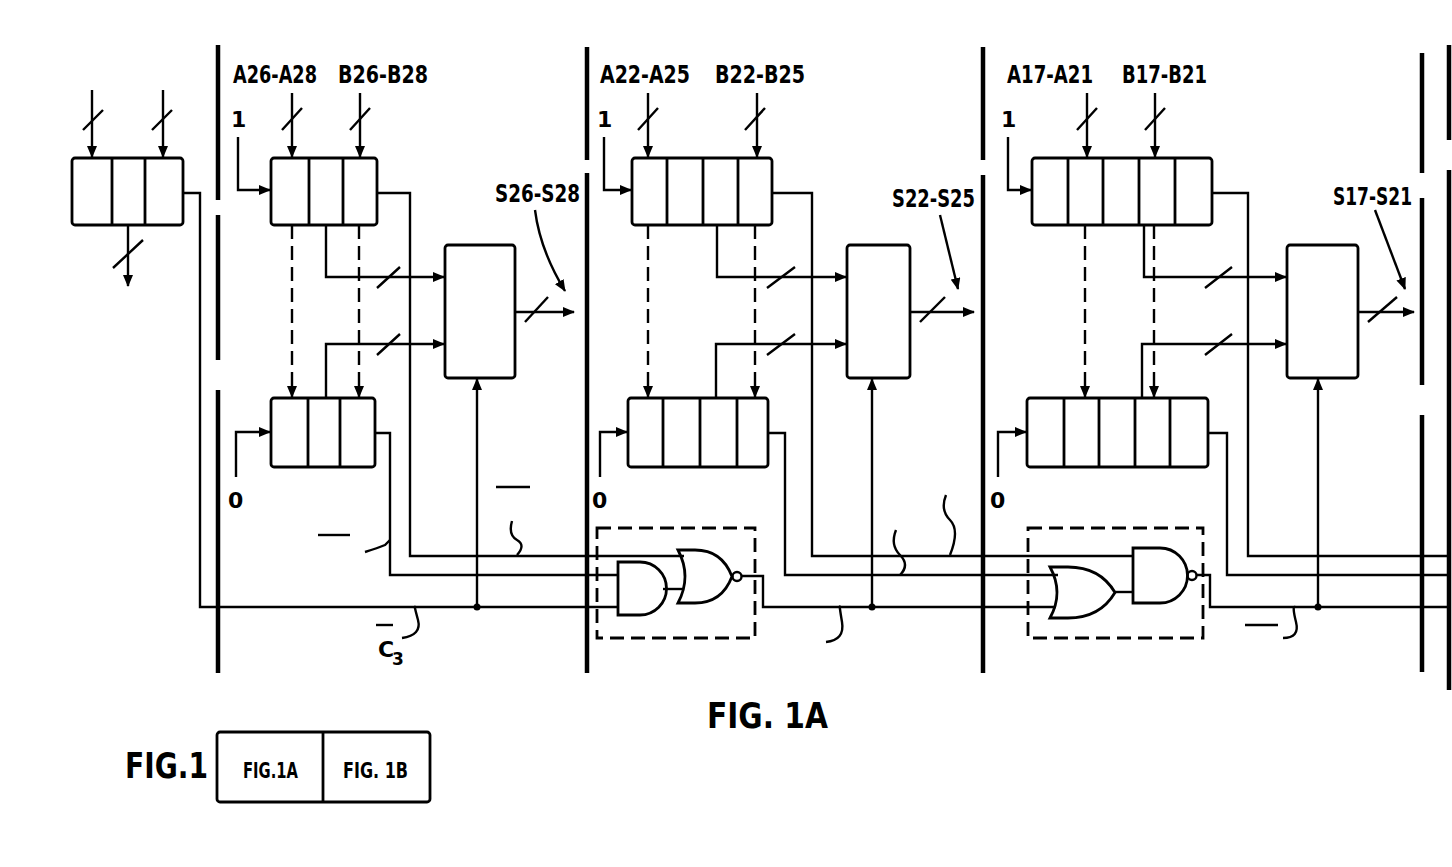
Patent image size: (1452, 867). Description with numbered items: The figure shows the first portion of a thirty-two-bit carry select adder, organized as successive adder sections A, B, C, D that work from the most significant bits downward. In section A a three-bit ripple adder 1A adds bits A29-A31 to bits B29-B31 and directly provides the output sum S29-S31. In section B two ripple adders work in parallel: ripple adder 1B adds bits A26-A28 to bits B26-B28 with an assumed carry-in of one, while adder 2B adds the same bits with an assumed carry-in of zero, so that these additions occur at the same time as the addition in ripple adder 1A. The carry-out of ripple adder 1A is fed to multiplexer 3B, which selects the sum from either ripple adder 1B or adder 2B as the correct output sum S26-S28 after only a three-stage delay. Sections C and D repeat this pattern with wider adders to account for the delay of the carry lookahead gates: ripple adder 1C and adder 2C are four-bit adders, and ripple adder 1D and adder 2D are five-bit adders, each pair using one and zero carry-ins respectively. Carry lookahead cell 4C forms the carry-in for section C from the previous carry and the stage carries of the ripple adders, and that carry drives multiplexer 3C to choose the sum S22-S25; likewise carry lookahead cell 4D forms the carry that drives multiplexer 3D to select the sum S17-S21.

The adder section A is at (160, 57).
The adder section B is at (460, 94).
The adder section C is at (857, 89).
The adder section D is at (1262, 87).
The ripple adder 1A is at (72, 176).
The ripple adder 1B is at (377, 169).
The ripple adder 1C is at (772, 169).
The ripple adder 1D is at (1212, 168).
The adder 2B is at (326, 468).
The adder 2C is at (687, 468).
The adder 2D is at (1118, 468).
The multiplexer 3B is at (470, 245).
The multiplexer 3C is at (868, 245).
The multiplexer 3D is at (1307, 245).
The carry lookahead cell 4C is at (685, 639).
The carry lookahead cell 4D is at (1120, 639).